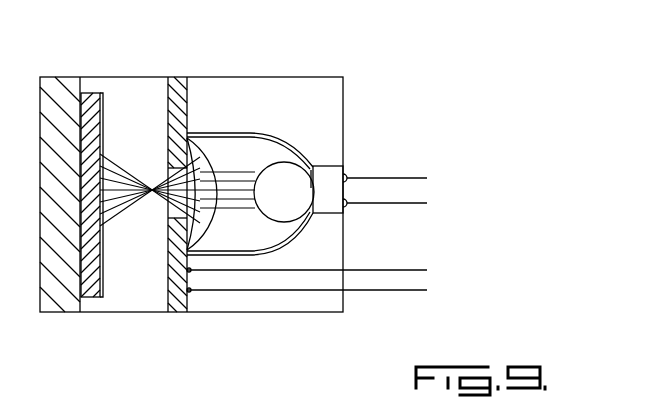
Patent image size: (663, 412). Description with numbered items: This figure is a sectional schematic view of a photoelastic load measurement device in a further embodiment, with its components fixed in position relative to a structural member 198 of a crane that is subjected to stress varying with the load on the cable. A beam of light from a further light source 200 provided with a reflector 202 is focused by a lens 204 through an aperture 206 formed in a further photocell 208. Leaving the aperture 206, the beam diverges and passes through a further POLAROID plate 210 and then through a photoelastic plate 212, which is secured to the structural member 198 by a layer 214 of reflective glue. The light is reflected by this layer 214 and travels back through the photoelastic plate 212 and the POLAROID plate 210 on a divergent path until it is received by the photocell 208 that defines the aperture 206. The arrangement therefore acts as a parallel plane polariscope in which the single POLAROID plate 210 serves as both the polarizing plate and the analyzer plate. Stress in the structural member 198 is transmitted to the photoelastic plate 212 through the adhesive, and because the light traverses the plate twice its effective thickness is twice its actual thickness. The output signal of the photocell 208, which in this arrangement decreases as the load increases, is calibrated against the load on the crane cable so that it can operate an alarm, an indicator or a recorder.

The structural member 198 is at (63, 313).
The light source 200 is at (328, 173).
The reflector 202 is at (297, 152).
The lens 204 is at (193, 151).
The aperture 206 is at (172, 212).
The photocell 208 is at (177, 82).
The POLAROID plate 210 is at (103, 107).
The photoelastic plate 212 is at (92, 88).
The layer of reflective glue 214 is at (72, 82).